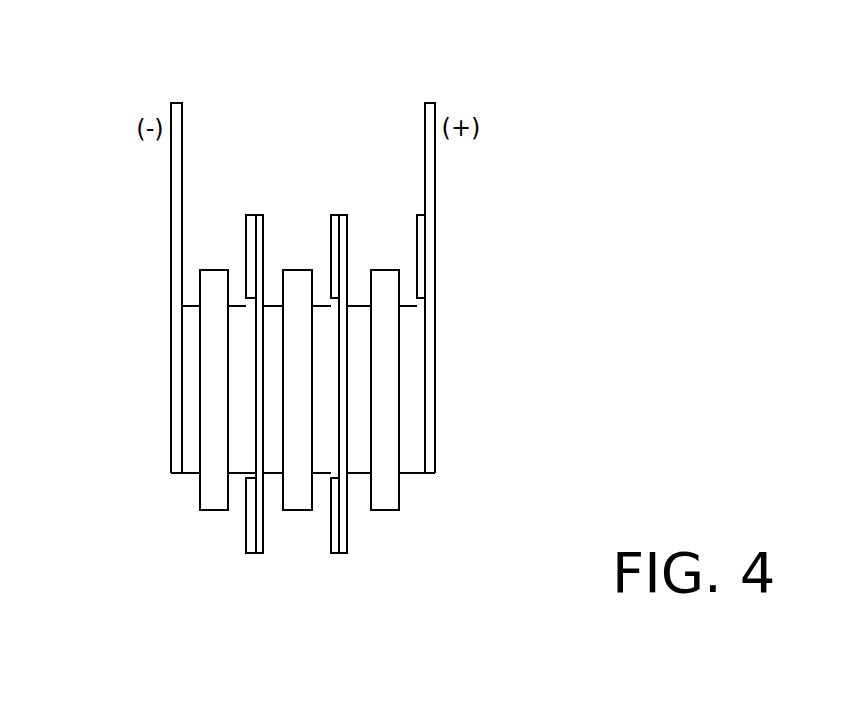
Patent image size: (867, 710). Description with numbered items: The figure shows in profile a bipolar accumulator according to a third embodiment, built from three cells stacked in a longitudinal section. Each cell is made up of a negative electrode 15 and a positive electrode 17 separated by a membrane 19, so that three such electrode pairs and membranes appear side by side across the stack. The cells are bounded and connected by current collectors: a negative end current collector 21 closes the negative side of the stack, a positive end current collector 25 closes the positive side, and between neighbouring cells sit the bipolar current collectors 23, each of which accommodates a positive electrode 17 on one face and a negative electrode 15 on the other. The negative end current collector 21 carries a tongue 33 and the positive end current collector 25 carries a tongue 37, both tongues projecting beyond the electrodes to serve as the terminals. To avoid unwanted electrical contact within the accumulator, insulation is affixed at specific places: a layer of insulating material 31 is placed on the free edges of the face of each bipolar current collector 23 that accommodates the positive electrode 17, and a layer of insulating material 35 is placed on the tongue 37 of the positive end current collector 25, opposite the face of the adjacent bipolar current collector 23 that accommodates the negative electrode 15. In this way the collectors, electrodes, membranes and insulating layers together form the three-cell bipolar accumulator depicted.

The negative electrode 15 is at (270, 357).
The positive electrode 17 is at (237, 380).
The membrane 19 is at (205, 495).
The negative end current collector 21 is at (176, 108).
The bipolar current collector 23 is at (258, 218).
The positive end current collector 25 is at (429, 110).
The layer of insulating material 31 is at (250, 250).
The tongue 33 is at (178, 172).
The layer of insulating material 35 is at (420, 250).
The tongue 37 is at (432, 172).